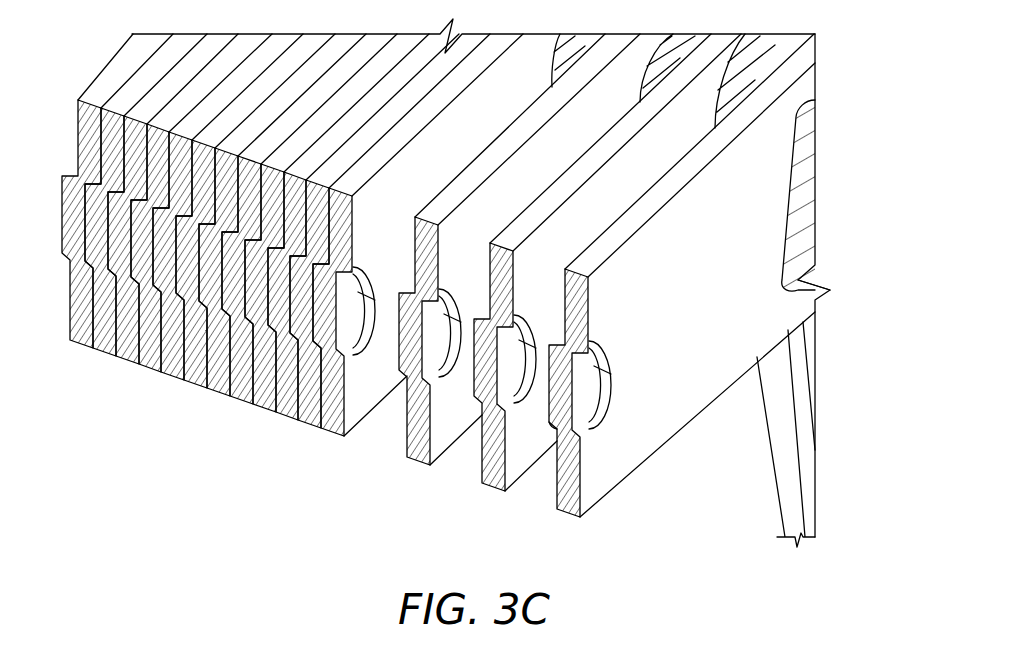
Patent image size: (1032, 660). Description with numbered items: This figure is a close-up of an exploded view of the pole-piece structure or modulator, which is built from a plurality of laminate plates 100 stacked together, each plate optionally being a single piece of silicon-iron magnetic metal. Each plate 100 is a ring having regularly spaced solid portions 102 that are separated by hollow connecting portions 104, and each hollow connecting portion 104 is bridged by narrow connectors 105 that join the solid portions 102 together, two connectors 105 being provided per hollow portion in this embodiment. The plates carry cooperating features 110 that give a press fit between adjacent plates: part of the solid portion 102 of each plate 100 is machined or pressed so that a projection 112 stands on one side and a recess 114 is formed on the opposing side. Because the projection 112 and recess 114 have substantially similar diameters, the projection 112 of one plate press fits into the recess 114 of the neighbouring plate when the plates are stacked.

The laminate plate 100 is at (330, 424).
The solid portion 102 is at (700, 404).
The hollow connecting portion 104 is at (815, 268).
The connector 105 is at (815, 88).
The feature 110 is at (597, 412).
The projection 112 is at (562, 445).
The recess 114 is at (600, 390).